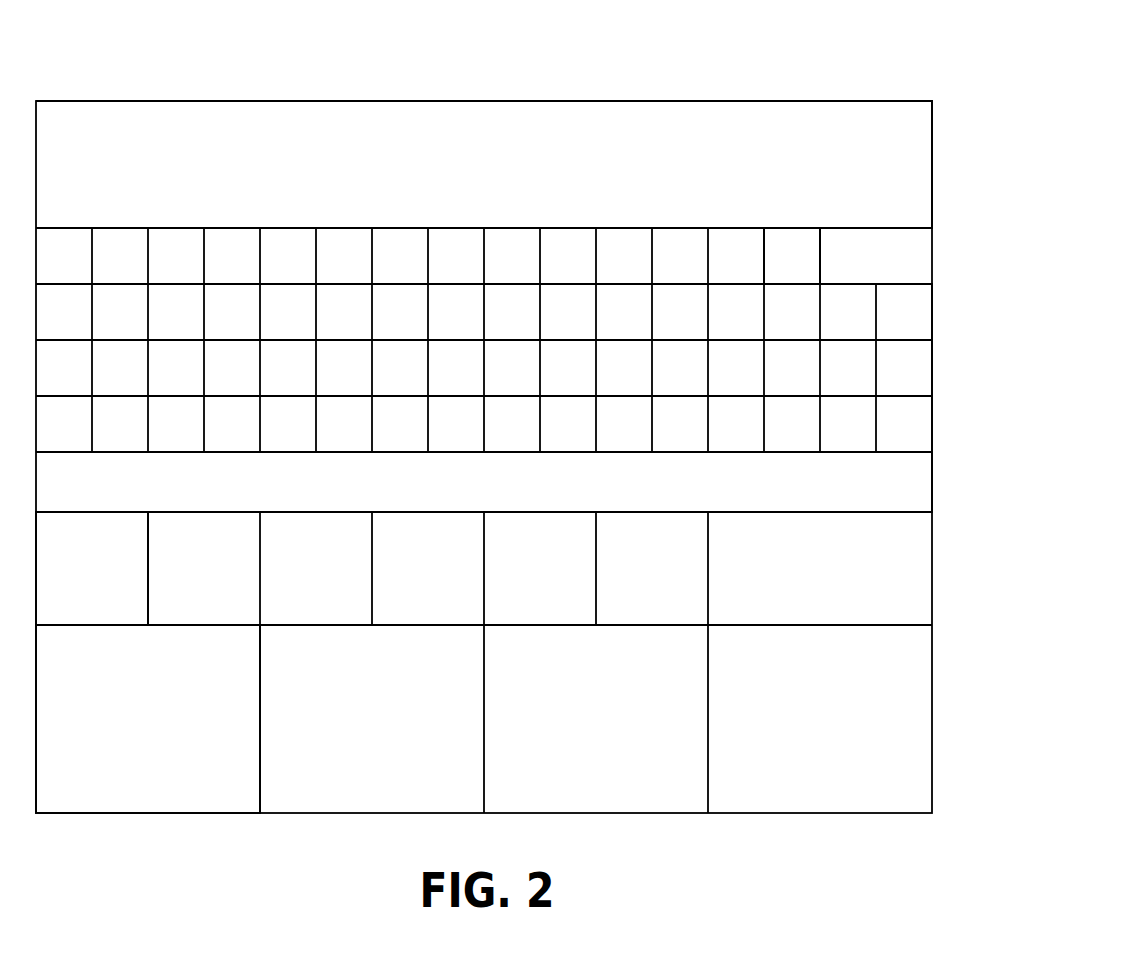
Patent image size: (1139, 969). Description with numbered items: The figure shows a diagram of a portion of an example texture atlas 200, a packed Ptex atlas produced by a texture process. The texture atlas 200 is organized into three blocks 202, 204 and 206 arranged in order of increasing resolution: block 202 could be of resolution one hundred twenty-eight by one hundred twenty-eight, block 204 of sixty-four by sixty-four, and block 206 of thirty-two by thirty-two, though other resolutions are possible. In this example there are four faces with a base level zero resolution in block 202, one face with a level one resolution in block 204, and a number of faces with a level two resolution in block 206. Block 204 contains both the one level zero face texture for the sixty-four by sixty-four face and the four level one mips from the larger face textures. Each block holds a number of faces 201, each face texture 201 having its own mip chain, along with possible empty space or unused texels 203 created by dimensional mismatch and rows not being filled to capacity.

The texture atlas 200 is at (484, 422).
The face texture 201 is at (428, 520).
The first block 202 is at (958, 623).
The unused texels 203 is at (484, 324).
The second block 204 is at (958, 515).
The third block 206 is at (958, 510).